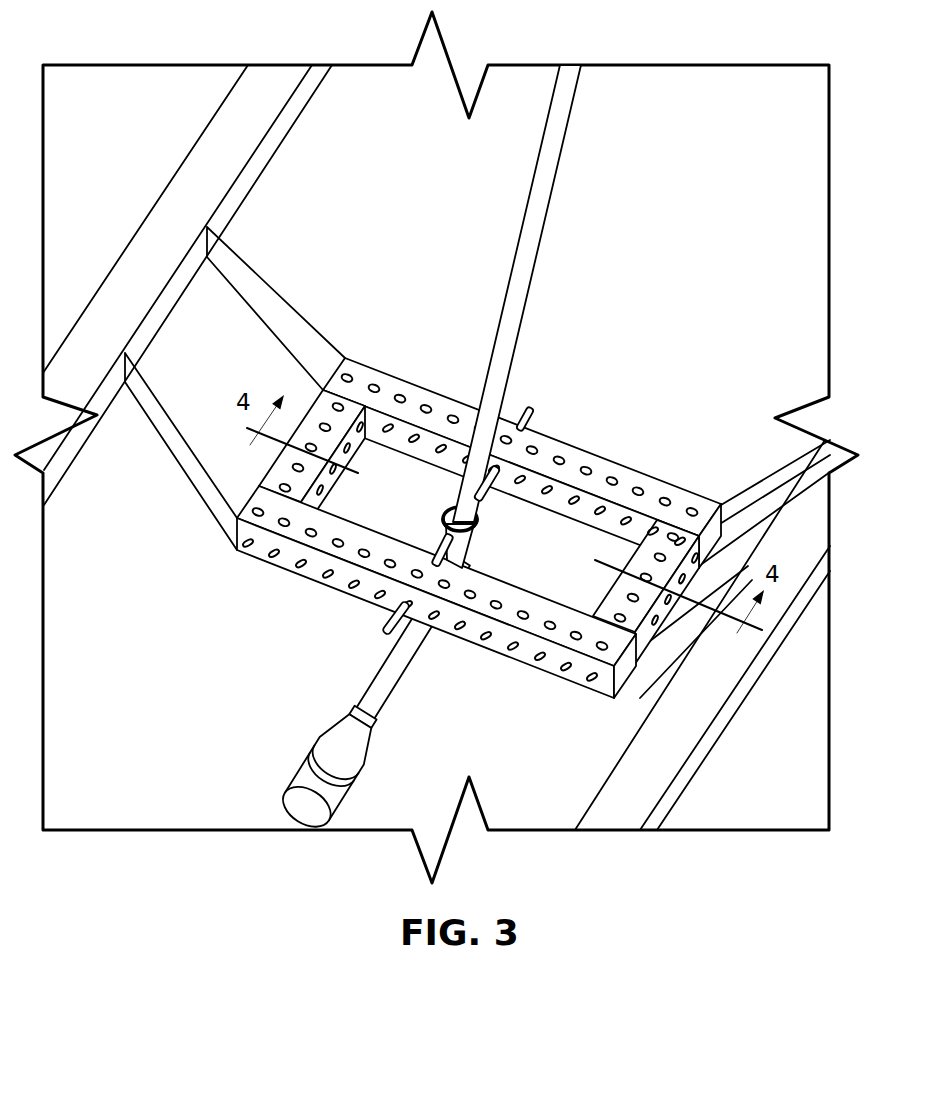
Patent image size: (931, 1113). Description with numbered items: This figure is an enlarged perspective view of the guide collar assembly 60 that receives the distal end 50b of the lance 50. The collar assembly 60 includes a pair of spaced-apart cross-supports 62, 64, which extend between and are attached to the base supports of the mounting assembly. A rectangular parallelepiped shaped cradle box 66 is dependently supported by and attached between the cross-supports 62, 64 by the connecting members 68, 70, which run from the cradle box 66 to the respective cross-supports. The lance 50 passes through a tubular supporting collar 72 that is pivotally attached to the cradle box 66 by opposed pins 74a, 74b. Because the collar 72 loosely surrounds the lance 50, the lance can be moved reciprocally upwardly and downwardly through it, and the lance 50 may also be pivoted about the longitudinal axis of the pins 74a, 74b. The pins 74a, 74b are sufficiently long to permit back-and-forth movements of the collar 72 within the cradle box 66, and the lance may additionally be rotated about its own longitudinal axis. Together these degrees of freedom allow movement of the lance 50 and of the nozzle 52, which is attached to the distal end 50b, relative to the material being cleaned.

The lance 50 is at (540, 180).
The distal end of the lance 50b is at (398, 681).
The nozzle 52 is at (306, 772).
The guide collar assembly 60 is at (479, 537).
The cross-support 62 is at (627, 752).
The cross-support 64 is at (211, 150).
The cradle box 66 is at (395, 387).
The connecting member 68 is at (763, 513).
The connecting member 70 is at (177, 404).
The tubular supporting collar 72 is at (478, 540).
The pin 74a is at (532, 417).
The pin 74b is at (384, 631).